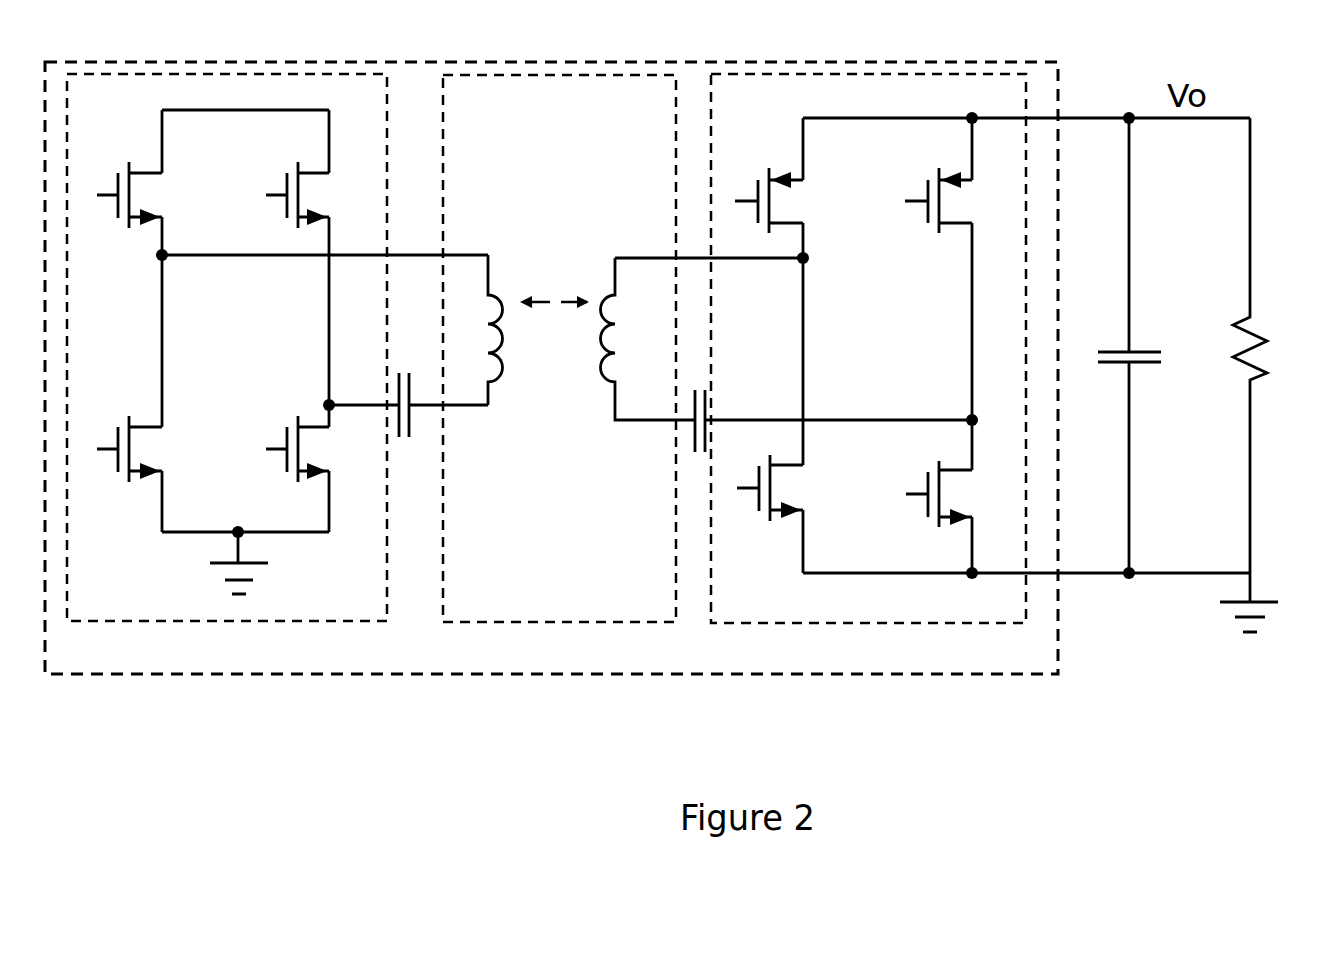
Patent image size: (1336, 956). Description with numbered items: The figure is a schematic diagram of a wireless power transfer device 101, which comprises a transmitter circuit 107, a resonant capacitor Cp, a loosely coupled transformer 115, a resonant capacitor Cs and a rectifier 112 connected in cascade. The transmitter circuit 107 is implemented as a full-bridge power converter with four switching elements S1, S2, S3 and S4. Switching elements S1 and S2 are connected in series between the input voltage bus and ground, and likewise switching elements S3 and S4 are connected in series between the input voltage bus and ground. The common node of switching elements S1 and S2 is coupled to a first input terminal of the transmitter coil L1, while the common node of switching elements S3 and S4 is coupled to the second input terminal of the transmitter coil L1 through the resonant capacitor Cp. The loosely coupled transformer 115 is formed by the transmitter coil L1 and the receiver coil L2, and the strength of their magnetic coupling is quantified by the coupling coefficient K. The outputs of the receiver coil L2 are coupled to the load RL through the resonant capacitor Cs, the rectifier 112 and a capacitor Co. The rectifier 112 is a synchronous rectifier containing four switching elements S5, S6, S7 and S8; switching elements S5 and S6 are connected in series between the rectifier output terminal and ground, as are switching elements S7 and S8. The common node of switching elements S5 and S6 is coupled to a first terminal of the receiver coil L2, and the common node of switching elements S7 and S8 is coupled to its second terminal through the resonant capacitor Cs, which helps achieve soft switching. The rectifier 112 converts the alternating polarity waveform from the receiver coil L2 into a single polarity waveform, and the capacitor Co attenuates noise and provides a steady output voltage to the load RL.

The wireless power transfer device 101 is at (568, 665).
The transmitter circuit 107 is at (132, 609).
The loosely coupled transformer 115 is at (572, 602).
The rectifier 112 is at (772, 612).
The switching element S1 is at (148, 195).
The switching element S2 is at (148, 449).
The switching element S3 is at (316, 195).
The switching element S4 is at (316, 449).
The switching element S5 is at (785, 200).
The switching element S6 is at (787, 488).
The switching element S7 is at (958, 200).
The switching element S8 is at (956, 494).
The transmitter coil L1 is at (477, 330).
The receiver coil L2 is at (648, 339).
The coupling coefficient K is at (554, 331).
The resonant capacitor Cp is at (439, 386).
The resonant capacitor Cs is at (694, 404).
The capacitor Co is at (1137, 345).
The load RL is at (1271, 345).